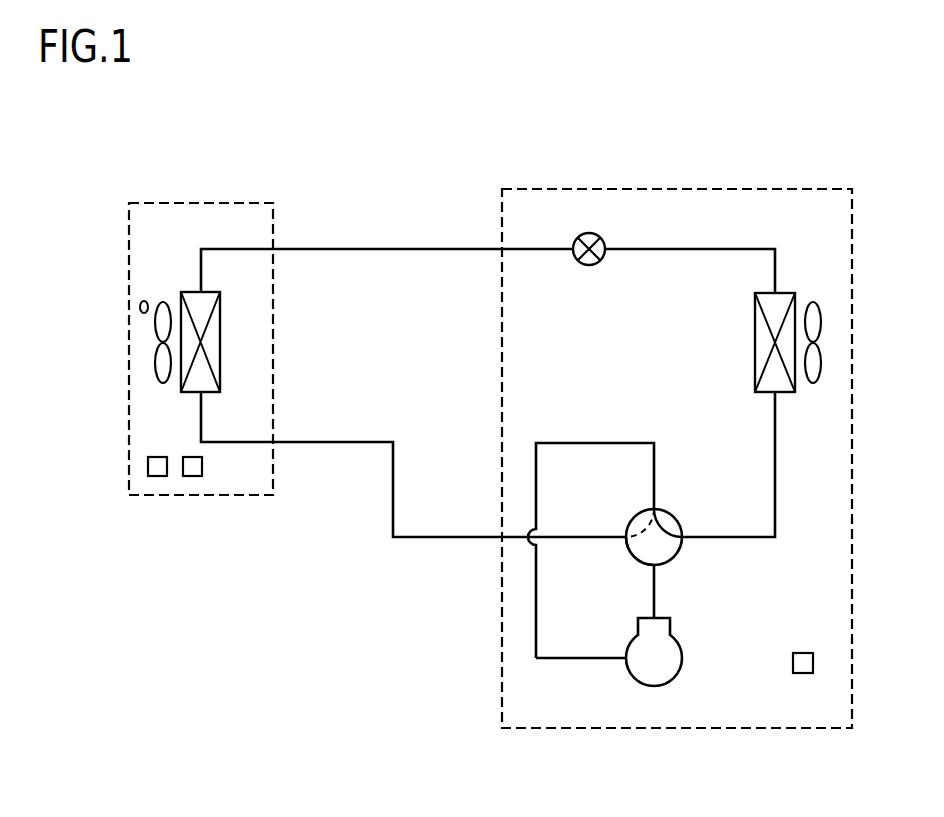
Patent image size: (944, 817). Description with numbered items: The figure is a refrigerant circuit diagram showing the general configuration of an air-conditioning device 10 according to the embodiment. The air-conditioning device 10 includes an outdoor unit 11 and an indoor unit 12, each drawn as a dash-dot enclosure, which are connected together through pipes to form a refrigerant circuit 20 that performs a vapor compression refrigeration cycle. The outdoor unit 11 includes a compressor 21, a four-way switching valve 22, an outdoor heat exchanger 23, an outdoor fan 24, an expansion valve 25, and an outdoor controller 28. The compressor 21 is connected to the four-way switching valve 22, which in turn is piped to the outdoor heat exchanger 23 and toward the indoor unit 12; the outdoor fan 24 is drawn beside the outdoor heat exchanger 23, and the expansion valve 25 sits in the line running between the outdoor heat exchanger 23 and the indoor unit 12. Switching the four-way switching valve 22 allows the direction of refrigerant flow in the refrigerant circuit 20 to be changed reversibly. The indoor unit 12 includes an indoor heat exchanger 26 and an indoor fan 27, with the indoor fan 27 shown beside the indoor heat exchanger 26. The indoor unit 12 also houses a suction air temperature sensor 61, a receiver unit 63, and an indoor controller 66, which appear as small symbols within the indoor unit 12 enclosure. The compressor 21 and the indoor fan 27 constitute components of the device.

The air-conditioning device 10 is at (287, 627).
The outdoor unit 11 is at (502, 665).
The indoor unit 12 is at (191, 203).
The refrigerant circuit 20 is at (441, 534).
The compressor 21 is at (682, 659).
The four-way switching valve 22 is at (677, 554).
The outdoor heat exchanger 23 is at (753, 343).
The outdoor fan 24 is at (813, 384).
The expansion valve 25 is at (589, 266).
The indoor heat exchanger 26 is at (221, 345).
The indoor fan 27 is at (163, 384).
The outdoor controller 28 is at (803, 653).
The suction air temperature sensor 61 is at (146, 301).
The receiver unit 63 is at (192, 477).
The indoor controller 66 is at (156, 477).